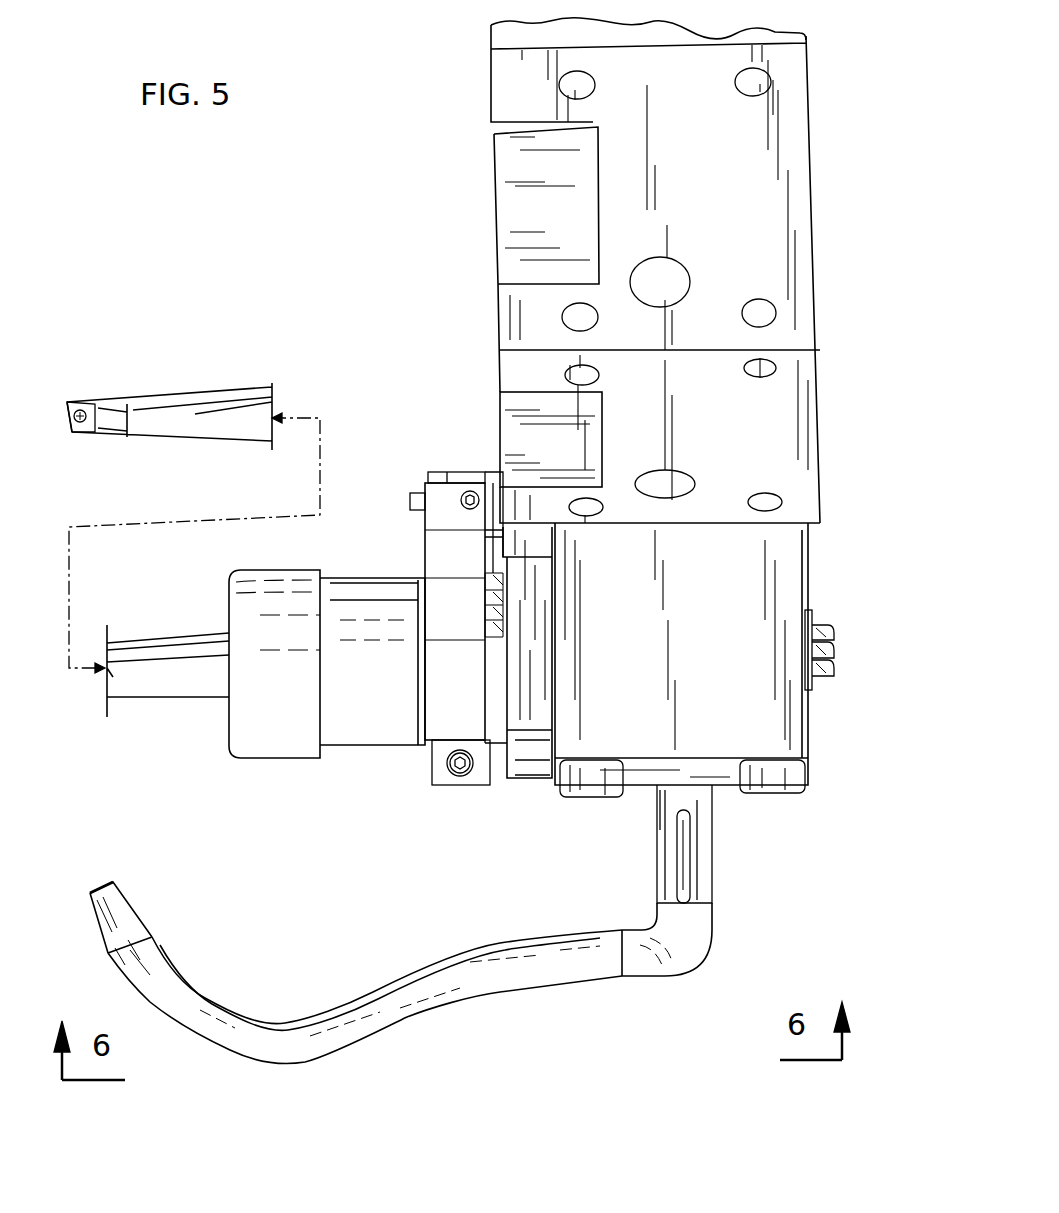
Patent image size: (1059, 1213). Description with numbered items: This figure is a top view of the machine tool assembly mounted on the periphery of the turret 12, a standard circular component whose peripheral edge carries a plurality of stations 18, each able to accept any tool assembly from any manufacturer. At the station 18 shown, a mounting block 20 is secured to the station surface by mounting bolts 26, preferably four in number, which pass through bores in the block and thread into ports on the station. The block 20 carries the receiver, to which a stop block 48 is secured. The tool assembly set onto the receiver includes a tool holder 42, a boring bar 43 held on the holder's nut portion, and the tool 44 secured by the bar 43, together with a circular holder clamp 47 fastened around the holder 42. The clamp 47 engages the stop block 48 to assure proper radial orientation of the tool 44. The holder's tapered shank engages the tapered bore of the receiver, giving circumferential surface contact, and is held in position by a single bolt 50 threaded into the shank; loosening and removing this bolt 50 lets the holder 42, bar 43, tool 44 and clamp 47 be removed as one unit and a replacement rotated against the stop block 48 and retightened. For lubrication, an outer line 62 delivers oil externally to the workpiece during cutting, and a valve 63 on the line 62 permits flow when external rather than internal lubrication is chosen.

The turret 12 is at (793, 163).
The station 18 is at (620, 405).
The mounting block 20 is at (782, 582).
The mounting bolts 26 is at (600, 787).
The tool holder 42 is at (366, 717).
The boring bar 43 is at (173, 413).
The tool 44 is at (83, 404).
The circular holder clamp 47 is at (448, 710).
The stop block 48 is at (458, 477).
The bolt 50 is at (833, 647).
The outer line 62 is at (473, 958).
The valve 63 is at (688, 858).